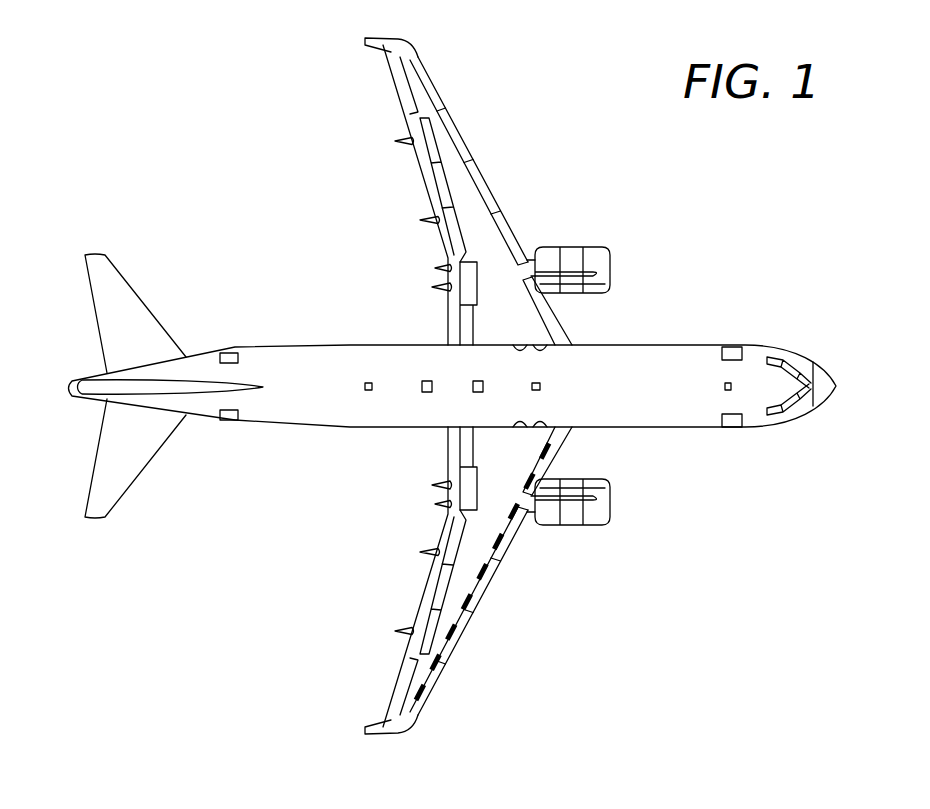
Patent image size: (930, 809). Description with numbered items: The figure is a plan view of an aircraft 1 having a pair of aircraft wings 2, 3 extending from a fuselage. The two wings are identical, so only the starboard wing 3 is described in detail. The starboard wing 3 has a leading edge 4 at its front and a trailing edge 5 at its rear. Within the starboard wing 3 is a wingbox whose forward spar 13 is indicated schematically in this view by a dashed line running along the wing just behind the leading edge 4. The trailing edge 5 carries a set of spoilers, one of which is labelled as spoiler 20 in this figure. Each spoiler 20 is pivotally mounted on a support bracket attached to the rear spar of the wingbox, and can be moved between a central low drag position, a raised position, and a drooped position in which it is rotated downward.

The aircraft 1 is at (248, 215).
The aircraft wing 2 is at (478, 232).
The starboard wing 3 is at (500, 450).
The leading edge 4 is at (512, 601).
The trailing edge 5 is at (402, 580).
The forward spar 13 is at (497, 548).
The spoiler 20 is at (422, 636).